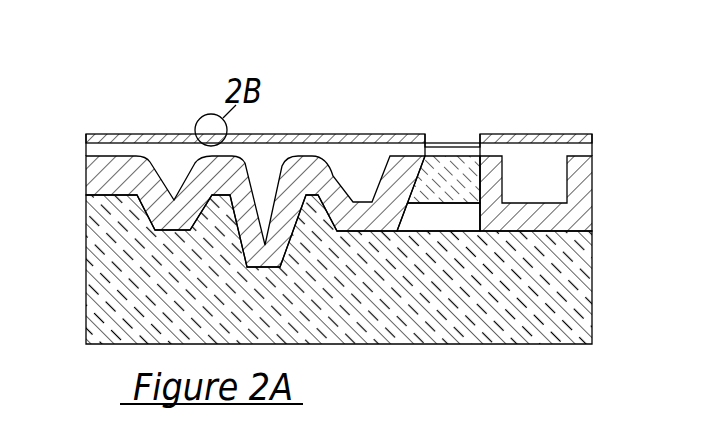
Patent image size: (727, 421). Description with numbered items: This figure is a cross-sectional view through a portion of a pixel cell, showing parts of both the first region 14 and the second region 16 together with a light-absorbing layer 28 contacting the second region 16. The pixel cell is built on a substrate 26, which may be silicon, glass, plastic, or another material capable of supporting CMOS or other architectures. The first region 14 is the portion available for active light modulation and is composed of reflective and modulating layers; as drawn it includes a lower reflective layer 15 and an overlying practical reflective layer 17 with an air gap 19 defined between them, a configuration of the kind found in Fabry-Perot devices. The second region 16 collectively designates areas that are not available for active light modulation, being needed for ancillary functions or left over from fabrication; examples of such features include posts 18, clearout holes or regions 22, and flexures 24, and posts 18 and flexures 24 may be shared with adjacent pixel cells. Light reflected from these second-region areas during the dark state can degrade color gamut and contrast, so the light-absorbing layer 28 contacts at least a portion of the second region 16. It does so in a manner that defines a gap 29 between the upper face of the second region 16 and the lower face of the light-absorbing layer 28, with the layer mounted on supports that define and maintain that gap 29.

The first region 14 is at (440, 164).
The lower reflective layer 15 is at (435, 215).
The second region 16 is at (80, 176).
The practical reflective layer 17 is at (463, 148).
The post 18 is at (258, 170).
The air gap 19 is at (455, 150).
The clearout hole or region 22 is at (168, 164).
The flexure 24 is at (362, 196).
The substrate 26 is at (357, 315).
The light-absorbing layer 28 is at (337, 143).
The gap 29 is at (98, 150).